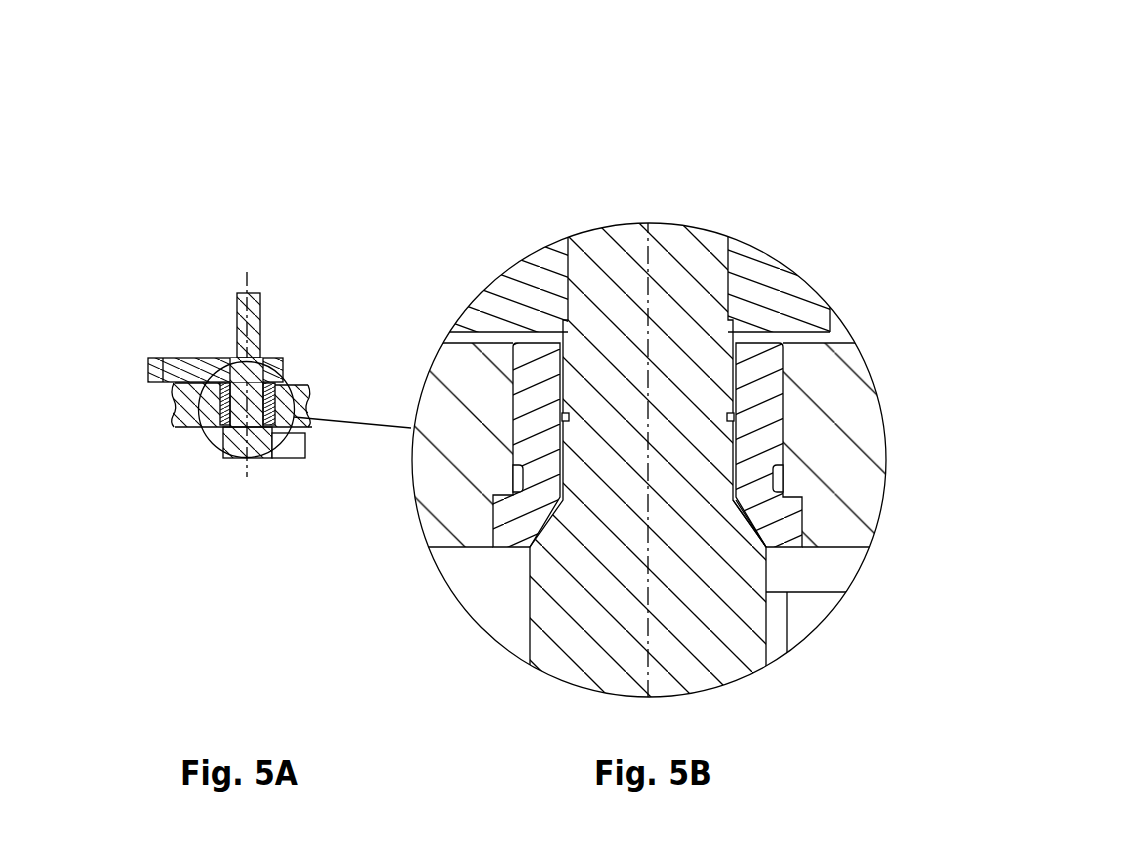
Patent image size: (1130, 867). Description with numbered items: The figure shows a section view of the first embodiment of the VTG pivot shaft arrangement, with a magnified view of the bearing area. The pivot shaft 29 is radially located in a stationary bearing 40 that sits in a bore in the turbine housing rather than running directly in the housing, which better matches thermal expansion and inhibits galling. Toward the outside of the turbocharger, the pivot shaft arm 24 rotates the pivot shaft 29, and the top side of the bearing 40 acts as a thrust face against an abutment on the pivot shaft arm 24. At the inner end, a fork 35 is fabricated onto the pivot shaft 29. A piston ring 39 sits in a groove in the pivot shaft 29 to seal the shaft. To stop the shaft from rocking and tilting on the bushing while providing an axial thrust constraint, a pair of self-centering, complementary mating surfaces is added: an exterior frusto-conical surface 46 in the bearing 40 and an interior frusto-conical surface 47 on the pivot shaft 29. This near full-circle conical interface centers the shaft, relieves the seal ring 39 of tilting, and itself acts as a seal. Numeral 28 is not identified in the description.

In FIG. 5A, the pivot shaft arm 24 is at (190, 360).
In FIG. 5B, the pin 28 is at (647, 260).
In FIG. 5B, the pivot shaft 29 is at (690, 270).
In FIG. 5A, the fork 35 is at (298, 448).
In FIG. 5B, the piston ring 39 is at (782, 413).
In FIG. 5B, the bearing 40 is at (755, 458).
In FIG. 5B, the exterior frusto-conical surface 46 is at (768, 518).
In FIG. 5B, the interior frusto-conical surface 47 is at (743, 527).